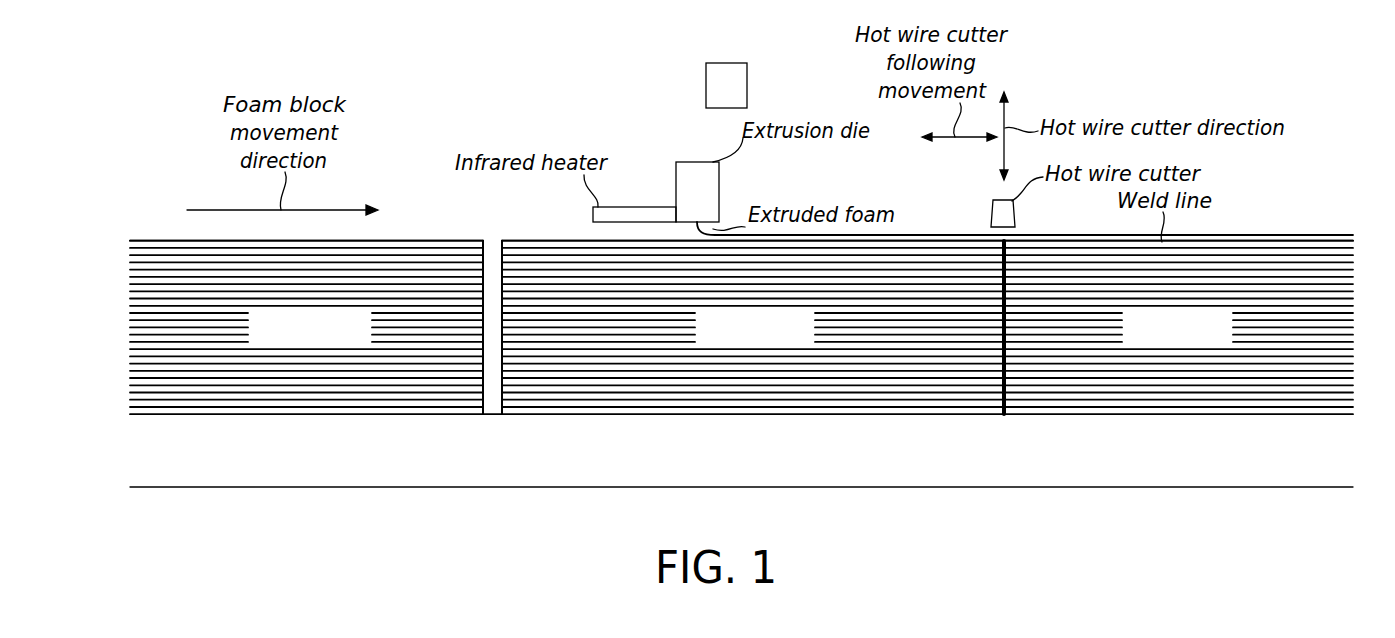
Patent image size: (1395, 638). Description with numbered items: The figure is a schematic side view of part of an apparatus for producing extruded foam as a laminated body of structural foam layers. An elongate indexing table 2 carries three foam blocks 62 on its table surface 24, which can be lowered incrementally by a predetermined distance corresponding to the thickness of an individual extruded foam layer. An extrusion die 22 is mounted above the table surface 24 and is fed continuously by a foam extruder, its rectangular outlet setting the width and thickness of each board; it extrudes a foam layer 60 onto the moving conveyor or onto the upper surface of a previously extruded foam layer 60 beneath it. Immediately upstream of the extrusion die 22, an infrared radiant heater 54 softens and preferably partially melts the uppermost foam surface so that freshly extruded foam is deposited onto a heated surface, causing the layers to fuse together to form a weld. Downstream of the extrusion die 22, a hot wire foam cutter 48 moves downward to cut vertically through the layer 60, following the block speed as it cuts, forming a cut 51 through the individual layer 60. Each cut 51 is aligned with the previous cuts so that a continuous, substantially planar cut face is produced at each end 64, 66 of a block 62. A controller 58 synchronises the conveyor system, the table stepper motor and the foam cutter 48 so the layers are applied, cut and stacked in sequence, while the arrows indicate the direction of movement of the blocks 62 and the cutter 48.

The indexing table 2 is at (367, 473).
The extrusion die 22 is at (720, 177).
The table surface 24 is at (150, 414).
The foam cutter 48 is at (992, 208).
The cut 51 is at (1004, 270).
The infrared radiant heater 54 is at (642, 207).
The controller 58 is at (706, 78).
The foam layer 60 is at (267, 414).
The block 62 is at (413, 258).
The block end 64 is at (500, 263).
The block end 66 is at (487, 252).